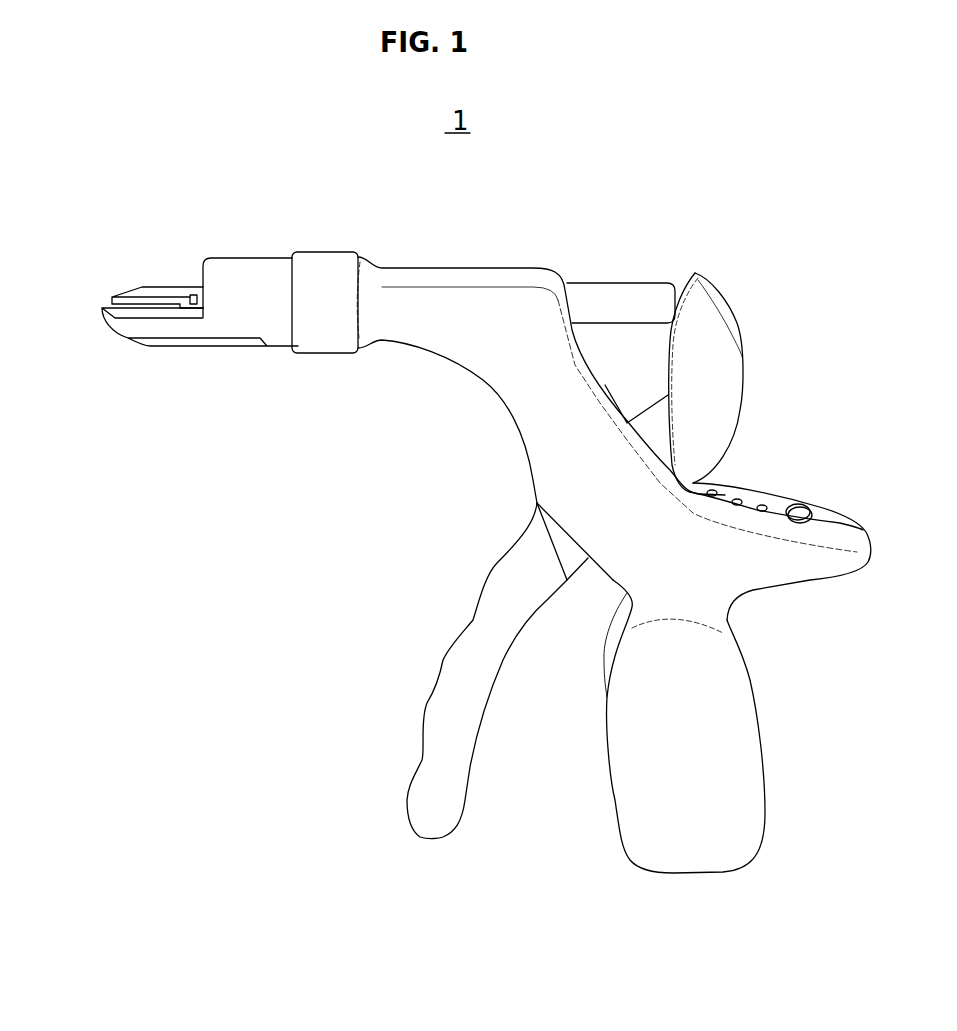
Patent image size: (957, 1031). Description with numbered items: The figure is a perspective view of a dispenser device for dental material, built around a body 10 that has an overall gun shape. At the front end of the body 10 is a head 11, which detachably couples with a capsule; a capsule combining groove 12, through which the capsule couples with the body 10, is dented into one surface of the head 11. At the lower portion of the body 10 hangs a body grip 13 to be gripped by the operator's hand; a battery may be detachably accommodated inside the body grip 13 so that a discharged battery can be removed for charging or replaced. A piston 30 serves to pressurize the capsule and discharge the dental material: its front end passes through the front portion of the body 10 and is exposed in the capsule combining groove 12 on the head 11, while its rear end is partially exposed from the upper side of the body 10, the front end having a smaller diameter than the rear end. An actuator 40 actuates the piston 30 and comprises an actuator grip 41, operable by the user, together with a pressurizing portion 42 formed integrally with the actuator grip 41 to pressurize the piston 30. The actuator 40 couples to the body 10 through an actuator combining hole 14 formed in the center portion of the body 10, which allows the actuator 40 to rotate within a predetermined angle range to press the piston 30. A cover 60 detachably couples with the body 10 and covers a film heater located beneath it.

The body 10 is at (467, 393).
The head 11 is at (255, 273).
The capsule combining groove 12 is at (142, 300).
The body grip 13 is at (730, 745).
The actuator combining hole 14 is at (603, 382).
The piston 30 is at (620, 273).
The actuator 40 is at (433, 578).
The actuator grip 41 is at (525, 583).
The pressurizing portion 42 is at (697, 403).
The cover 60 is at (170, 342).